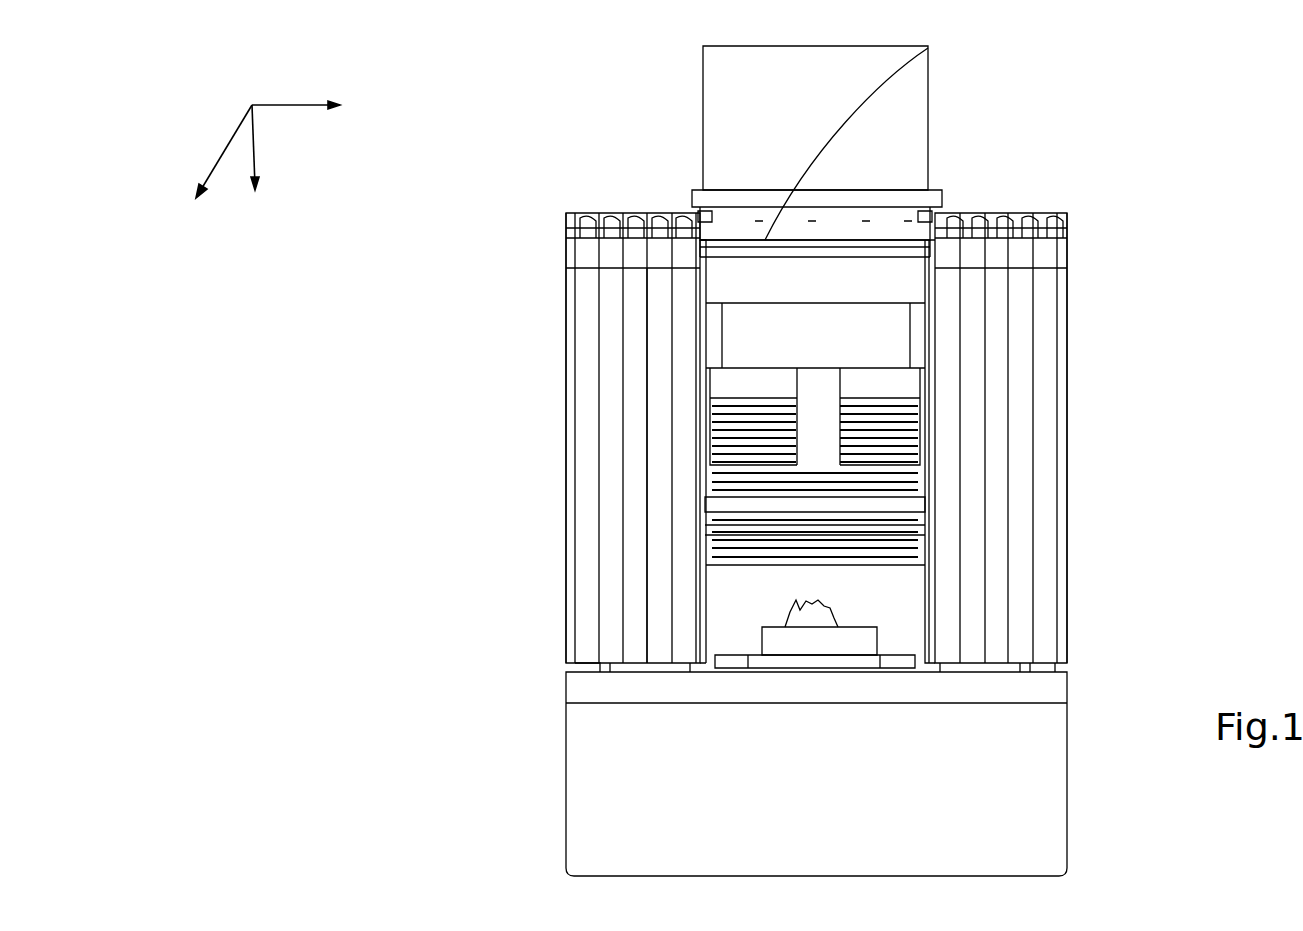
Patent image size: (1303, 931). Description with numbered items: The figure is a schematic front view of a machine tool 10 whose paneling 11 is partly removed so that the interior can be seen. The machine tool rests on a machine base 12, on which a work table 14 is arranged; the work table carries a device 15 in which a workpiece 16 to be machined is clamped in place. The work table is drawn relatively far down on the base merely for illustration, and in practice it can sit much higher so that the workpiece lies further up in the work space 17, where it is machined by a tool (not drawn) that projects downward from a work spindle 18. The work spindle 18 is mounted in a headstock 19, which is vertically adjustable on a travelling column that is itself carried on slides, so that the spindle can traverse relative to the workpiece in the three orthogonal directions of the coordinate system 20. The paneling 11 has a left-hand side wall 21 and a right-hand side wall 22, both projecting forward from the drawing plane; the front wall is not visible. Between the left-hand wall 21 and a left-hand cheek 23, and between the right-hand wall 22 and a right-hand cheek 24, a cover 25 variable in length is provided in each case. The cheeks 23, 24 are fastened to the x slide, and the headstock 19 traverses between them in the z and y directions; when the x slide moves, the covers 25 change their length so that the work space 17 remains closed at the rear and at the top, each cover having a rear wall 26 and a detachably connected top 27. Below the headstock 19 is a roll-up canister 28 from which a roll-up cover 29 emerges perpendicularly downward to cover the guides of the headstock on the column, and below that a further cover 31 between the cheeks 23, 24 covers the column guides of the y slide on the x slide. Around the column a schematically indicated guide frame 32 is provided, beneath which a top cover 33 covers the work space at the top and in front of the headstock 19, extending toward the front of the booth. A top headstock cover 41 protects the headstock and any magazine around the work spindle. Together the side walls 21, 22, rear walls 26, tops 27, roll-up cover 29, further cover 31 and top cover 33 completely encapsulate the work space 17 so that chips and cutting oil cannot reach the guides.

The machine tool 10 is at (1064, 140).
The paneling 11 is at (1068, 318).
The machine base 12 is at (1052, 782).
The work table 14 is at (762, 663).
The device 15 is at (810, 650).
The workpiece 16 is at (850, 607).
The work space 17 is at (763, 582).
The work spindle 18 is at (820, 386).
The headstock 19 is at (878, 358).
The coordinate system 20 is at (424, 146).
The left-hand side wall 21 is at (563, 413).
The right-hand side wall 22 is at (1068, 592).
The left-hand cheek 23 is at (705, 468).
The right-hand cheek 24 is at (933, 460).
The cover variable in length 25 is at (642, 332).
The rear wall 26 is at (608, 300).
The top 27 is at (633, 232).
The roll-up canister 28 is at (918, 386).
The roll-up cover 29 is at (925, 496).
The further cover 31 is at (705, 547).
The guide frame 32 is at (880, 220).
The top cover 33 is at (928, 48).
The top headstock cover 41 is at (740, 112).